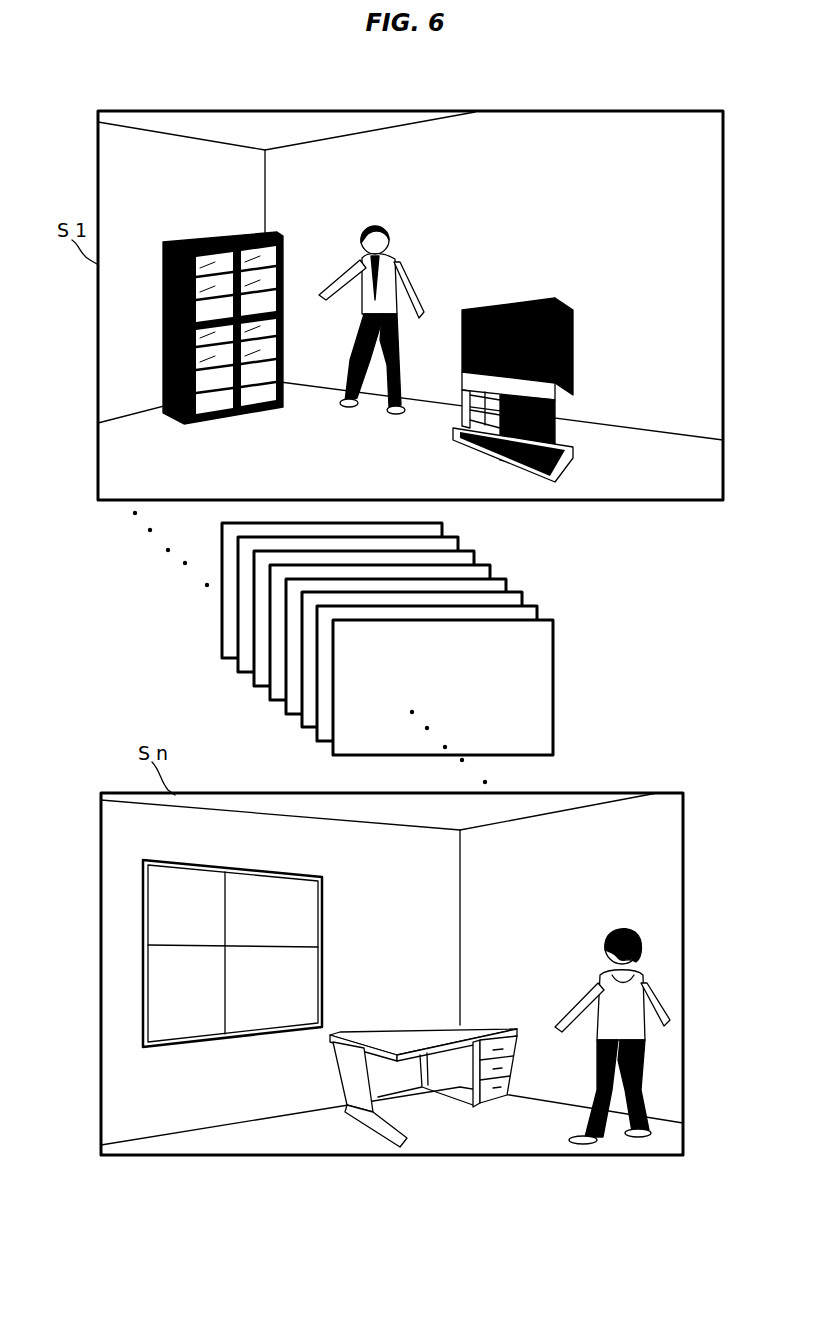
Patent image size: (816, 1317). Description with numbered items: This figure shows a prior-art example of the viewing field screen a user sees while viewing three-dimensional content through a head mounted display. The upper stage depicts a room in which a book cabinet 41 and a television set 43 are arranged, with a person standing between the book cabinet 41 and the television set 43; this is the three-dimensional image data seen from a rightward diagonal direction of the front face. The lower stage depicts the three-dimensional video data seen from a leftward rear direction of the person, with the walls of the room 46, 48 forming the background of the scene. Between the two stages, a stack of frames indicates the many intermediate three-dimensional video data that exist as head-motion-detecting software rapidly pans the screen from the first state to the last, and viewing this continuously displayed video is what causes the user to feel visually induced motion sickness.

The book cabinet 41 is at (212, 240).
The television set 43 is at (526, 300).
The wall 46 is at (693, 197).
The wall 48 is at (140, 838).